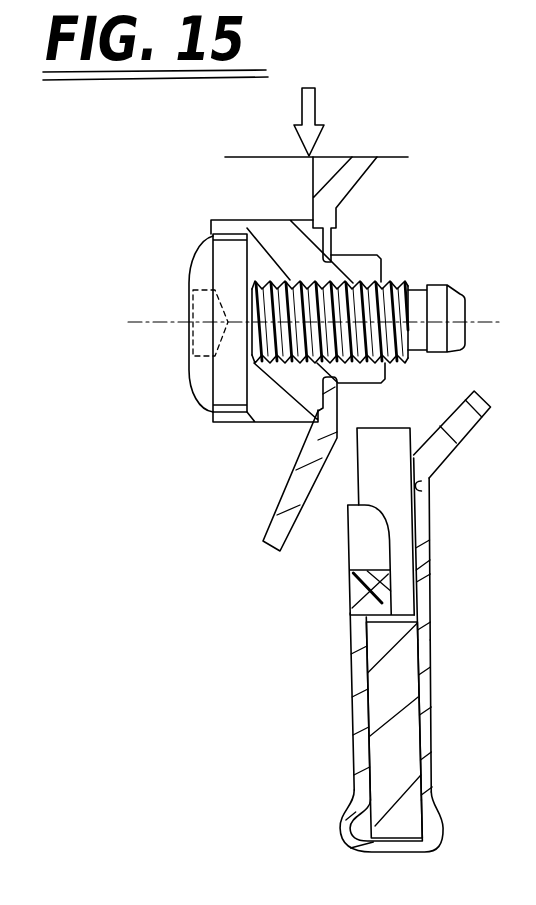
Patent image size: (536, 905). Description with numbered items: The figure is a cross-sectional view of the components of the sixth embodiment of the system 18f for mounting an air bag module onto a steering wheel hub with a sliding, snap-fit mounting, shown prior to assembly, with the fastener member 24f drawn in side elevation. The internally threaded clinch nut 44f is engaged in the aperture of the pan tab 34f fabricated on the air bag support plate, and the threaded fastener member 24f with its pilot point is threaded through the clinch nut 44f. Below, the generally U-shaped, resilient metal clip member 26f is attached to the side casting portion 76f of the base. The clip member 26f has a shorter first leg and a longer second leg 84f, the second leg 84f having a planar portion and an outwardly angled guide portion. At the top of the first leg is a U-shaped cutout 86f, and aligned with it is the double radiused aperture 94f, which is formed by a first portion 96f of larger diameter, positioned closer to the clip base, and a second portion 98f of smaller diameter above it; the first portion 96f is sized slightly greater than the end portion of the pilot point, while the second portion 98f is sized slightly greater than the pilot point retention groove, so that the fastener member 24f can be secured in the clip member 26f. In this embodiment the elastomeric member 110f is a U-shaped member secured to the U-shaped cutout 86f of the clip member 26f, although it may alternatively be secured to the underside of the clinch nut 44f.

The system 18f is at (165, 397).
The fastener member 24f is at (386, 284).
The clinch nut 44f is at (268, 233).
The pan tab 34f is at (273, 508).
The clip member 26f is at (440, 786).
The double radiused aperture 94f is at (414, 526).
The second portion of aperture 98f is at (423, 488).
The first portion of aperture 96f is at (420, 575).
The second leg 84f is at (433, 706).
The U-shaped cutout 86f is at (376, 596).
The elastomeric member 110f is at (347, 580).
The side casting portion 76f is at (371, 718).